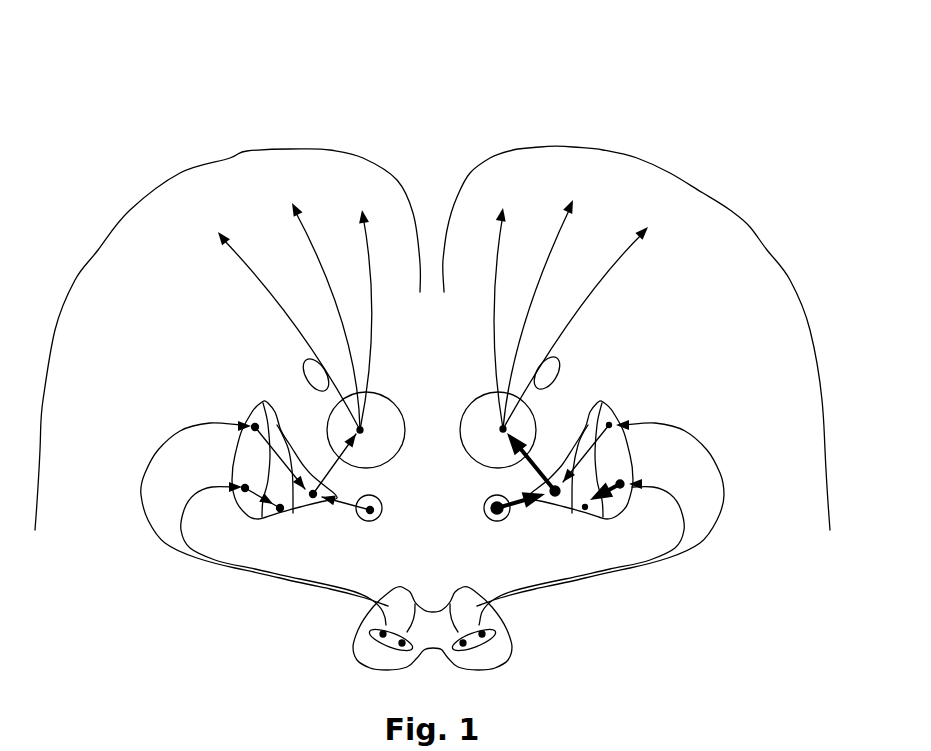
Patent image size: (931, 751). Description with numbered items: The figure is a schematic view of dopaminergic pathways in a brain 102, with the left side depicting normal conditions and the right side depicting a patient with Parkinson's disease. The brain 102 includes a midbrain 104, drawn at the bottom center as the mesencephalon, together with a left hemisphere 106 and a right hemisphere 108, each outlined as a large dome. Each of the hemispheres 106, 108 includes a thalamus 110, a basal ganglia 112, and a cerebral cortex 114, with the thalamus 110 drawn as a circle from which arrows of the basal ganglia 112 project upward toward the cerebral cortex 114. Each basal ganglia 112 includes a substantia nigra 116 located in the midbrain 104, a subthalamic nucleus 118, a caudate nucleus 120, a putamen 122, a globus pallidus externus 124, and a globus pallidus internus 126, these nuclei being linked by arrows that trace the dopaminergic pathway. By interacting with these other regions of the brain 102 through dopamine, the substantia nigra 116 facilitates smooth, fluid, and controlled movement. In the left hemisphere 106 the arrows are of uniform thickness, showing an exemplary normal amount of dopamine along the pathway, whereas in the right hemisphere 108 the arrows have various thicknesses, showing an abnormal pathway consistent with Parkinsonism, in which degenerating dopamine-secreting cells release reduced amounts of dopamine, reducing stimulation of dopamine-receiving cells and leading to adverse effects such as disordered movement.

The brain 102 is at (777, 81).
The midbrain 104 is at (320, 651).
The left hemisphere 106 is at (94, 178).
The right hemisphere 108 is at (762, 178).
The thalamus 110 is at (388, 413).
The basal ganglia 112 is at (216, 334).
The cerebral cortex 114 is at (235, 168).
The substantia nigra 116 is at (375, 632).
The subthalamic nucleus 118 is at (370, 522).
The caudate nucleus 120 is at (305, 365).
The putamen 122 is at (266, 405).
The globus pallidus externus 124 is at (275, 517).
The globus pallidus internus 126 is at (312, 513).